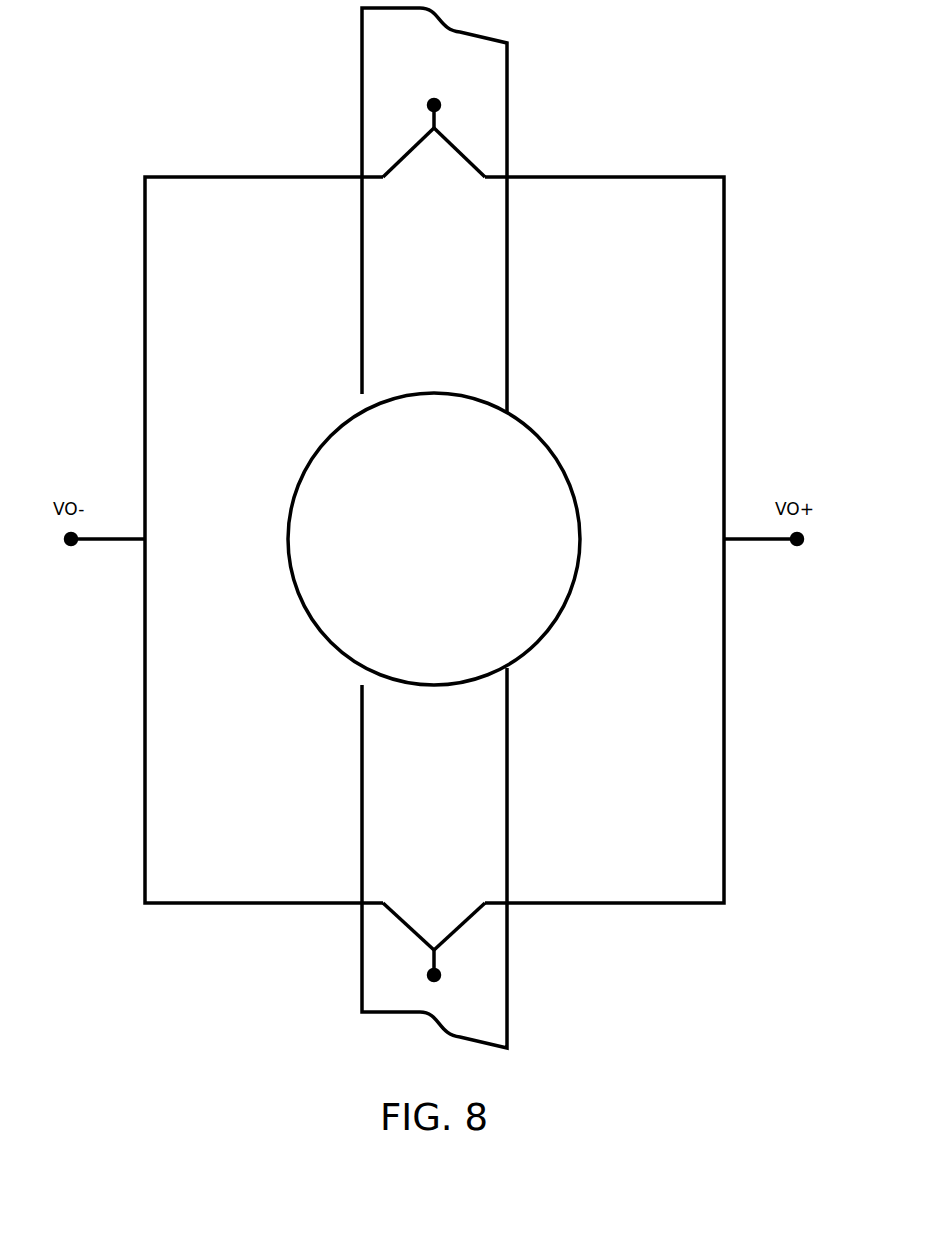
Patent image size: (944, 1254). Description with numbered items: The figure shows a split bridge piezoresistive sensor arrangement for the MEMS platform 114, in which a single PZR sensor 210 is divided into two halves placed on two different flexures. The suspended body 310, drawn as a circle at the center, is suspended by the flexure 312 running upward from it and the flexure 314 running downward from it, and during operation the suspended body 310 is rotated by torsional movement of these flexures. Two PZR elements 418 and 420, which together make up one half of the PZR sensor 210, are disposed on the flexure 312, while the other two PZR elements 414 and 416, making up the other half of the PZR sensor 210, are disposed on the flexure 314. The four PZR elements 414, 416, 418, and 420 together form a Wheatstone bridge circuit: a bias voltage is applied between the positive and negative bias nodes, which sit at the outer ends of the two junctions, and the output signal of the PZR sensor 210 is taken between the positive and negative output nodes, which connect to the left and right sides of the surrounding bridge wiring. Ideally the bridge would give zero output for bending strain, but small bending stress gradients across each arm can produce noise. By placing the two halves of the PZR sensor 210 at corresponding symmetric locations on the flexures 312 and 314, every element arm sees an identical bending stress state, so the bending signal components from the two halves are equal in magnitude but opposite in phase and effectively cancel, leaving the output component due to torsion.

The MEMS platform 114 is at (228, 112).
The PZR sensor 210 is at (448, 190).
The suspended body 310 is at (538, 435).
The flexure 312 is at (507, 333).
The flexure 314 is at (507, 770).
The PZR element 414 is at (457, 926).
The PZR element 416 is at (410, 926).
The PZR element 418 is at (411, 150).
The PZR element 420 is at (457, 150).